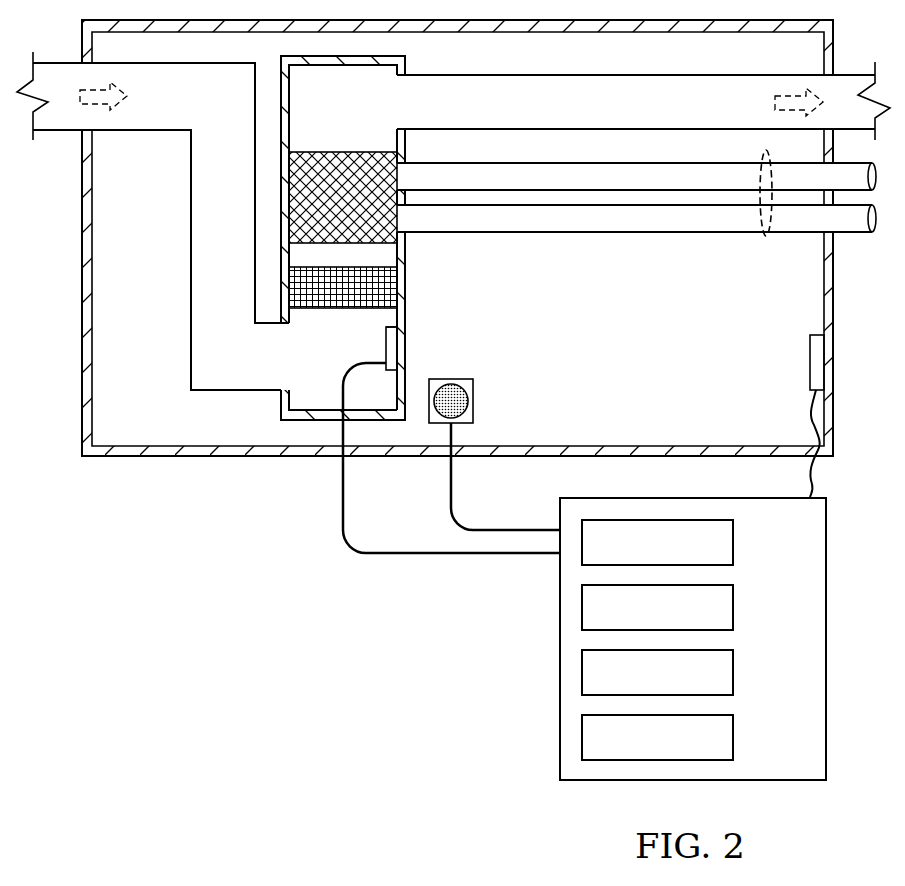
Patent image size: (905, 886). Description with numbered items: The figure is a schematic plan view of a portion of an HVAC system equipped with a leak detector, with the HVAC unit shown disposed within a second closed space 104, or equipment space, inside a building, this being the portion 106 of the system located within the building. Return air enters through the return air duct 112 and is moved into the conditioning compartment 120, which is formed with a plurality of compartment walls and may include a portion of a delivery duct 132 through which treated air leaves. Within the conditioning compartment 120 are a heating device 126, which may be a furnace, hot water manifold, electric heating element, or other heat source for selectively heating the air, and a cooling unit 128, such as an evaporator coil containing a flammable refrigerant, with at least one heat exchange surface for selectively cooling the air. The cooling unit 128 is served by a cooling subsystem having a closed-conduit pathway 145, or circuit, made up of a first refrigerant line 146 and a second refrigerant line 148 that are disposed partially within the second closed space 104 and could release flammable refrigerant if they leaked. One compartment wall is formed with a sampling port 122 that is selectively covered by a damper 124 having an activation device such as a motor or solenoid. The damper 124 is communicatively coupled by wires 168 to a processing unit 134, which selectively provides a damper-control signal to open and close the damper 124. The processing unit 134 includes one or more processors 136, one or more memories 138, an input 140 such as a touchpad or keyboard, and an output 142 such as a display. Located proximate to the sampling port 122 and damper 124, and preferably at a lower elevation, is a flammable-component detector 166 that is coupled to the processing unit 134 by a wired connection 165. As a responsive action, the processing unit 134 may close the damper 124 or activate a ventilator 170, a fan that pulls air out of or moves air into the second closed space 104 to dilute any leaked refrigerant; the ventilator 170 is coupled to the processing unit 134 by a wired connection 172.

The second closed space 104 is at (635, 355).
The portion of the system 106 is at (380, 238).
The return air duct 112 is at (140, 133).
The conditioning compartment 120 is at (404, 252).
The sampling port 122 is at (402, 348).
The damper 124 is at (395, 315).
The heating device 126 is at (343, 311).
The cooling unit 128 is at (342, 150).
The delivery duct 132 is at (635, 116).
The processing unit 134 is at (693, 672).
The processor 136 is at (735, 541).
The memory 138 is at (735, 605).
The input 140 is at (735, 670).
The output 142 is at (694, 739).
The closed-conduit pathway 145 is at (766, 241).
The first refrigerant line 146 is at (667, 191).
The second refrigerant line 148 is at (633, 234).
The wired connection 165 is at (446, 485).
The flammable-component detector 166 is at (474, 400).
The wires 168 is at (339, 494).
The ventilator 170 is at (810, 362).
The wired connection 172 is at (813, 408).